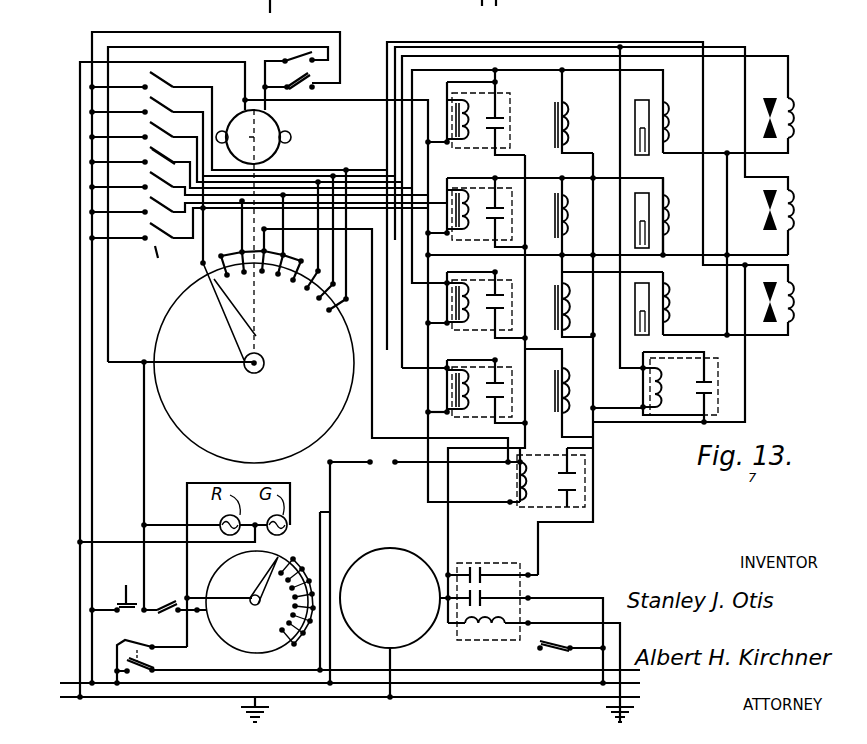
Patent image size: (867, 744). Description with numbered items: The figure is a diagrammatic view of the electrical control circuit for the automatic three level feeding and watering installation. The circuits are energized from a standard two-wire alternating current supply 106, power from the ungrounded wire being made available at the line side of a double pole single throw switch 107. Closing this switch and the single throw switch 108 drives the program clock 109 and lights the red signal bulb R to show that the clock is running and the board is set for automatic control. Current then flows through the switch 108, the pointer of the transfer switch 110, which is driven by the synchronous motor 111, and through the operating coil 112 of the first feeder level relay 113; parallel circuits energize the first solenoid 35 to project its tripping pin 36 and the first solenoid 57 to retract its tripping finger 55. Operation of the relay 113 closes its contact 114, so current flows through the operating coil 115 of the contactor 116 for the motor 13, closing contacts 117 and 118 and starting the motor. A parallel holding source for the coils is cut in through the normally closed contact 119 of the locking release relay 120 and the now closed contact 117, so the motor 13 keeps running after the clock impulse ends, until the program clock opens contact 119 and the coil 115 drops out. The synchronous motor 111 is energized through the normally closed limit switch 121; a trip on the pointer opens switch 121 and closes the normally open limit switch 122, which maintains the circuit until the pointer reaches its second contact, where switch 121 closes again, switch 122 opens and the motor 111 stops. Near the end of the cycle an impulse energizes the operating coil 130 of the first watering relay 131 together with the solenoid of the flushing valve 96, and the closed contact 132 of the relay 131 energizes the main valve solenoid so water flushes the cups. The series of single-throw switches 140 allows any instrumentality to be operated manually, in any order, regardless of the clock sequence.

The electric motor 13 is at (383, 620).
The solenoid 35 is at (583, 99).
The tripping pin 36 is at (556, 104).
The tripping finger 55 is at (642, 108).
The solenoid 57 is at (672, 106).
The solenoid-controlled flushing valve 96 is at (771, 120).
The alternating current supply 106 is at (537, 686).
The double pole single throw switch 107 is at (133, 627).
The single throw switch 108 is at (172, 594).
The program clock 109 is at (255, 644).
The transfer switch 110 is at (207, 415).
The synchronous motor 111 is at (263, 137).
The operating coil 112 is at (460, 103).
The first feeder level relay 113 is at (505, 95).
The contact 114 is at (503, 122).
The operating coil 115 is at (462, 628).
The contactor 116 is at (521, 590).
The contact 117 is at (478, 567).
The contact 118 is at (483, 590).
The normally closed contact 119 is at (572, 483).
The locking release relay 120 is at (584, 496).
The normally closed limit switch 121 is at (312, 52).
The normally open limit switch 122 is at (314, 84).
The operating coil 130 is at (428, 412).
The first watering relay 131 is at (453, 376).
The contact 132 is at (489, 396).
The single-throw switches 140 is at (133, 166).